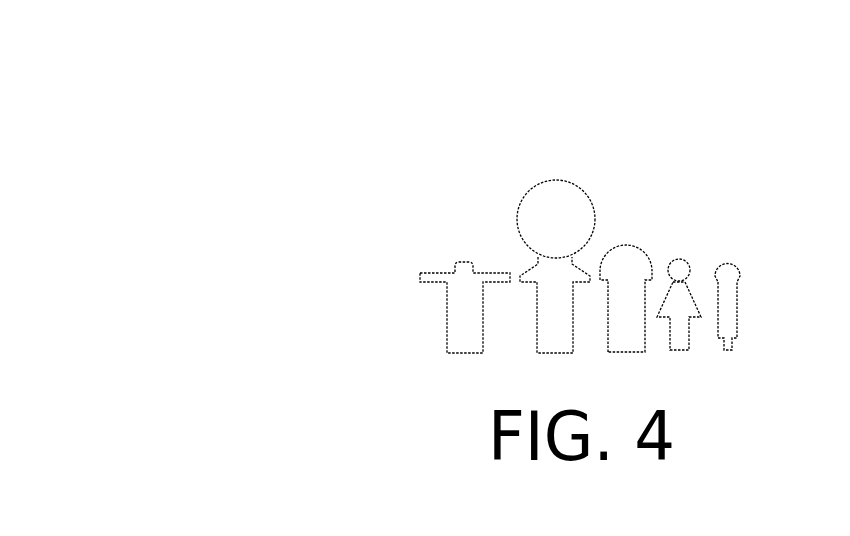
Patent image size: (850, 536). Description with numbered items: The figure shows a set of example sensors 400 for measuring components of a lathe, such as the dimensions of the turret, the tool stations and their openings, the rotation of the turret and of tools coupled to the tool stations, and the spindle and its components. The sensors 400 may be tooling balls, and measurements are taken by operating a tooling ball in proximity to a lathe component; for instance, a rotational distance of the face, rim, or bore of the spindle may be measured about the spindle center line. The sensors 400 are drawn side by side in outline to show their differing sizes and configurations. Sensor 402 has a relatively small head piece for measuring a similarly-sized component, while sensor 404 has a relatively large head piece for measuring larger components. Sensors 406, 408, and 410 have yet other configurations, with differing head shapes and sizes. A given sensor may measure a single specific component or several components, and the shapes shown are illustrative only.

The sensors 400 is at (519, 109).
The sensor 402 is at (420, 275).
The sensor 404 is at (555, 180).
The sensor 406 is at (627, 246).
The sensor 408 is at (681, 259).
The sensor 410 is at (731, 262).